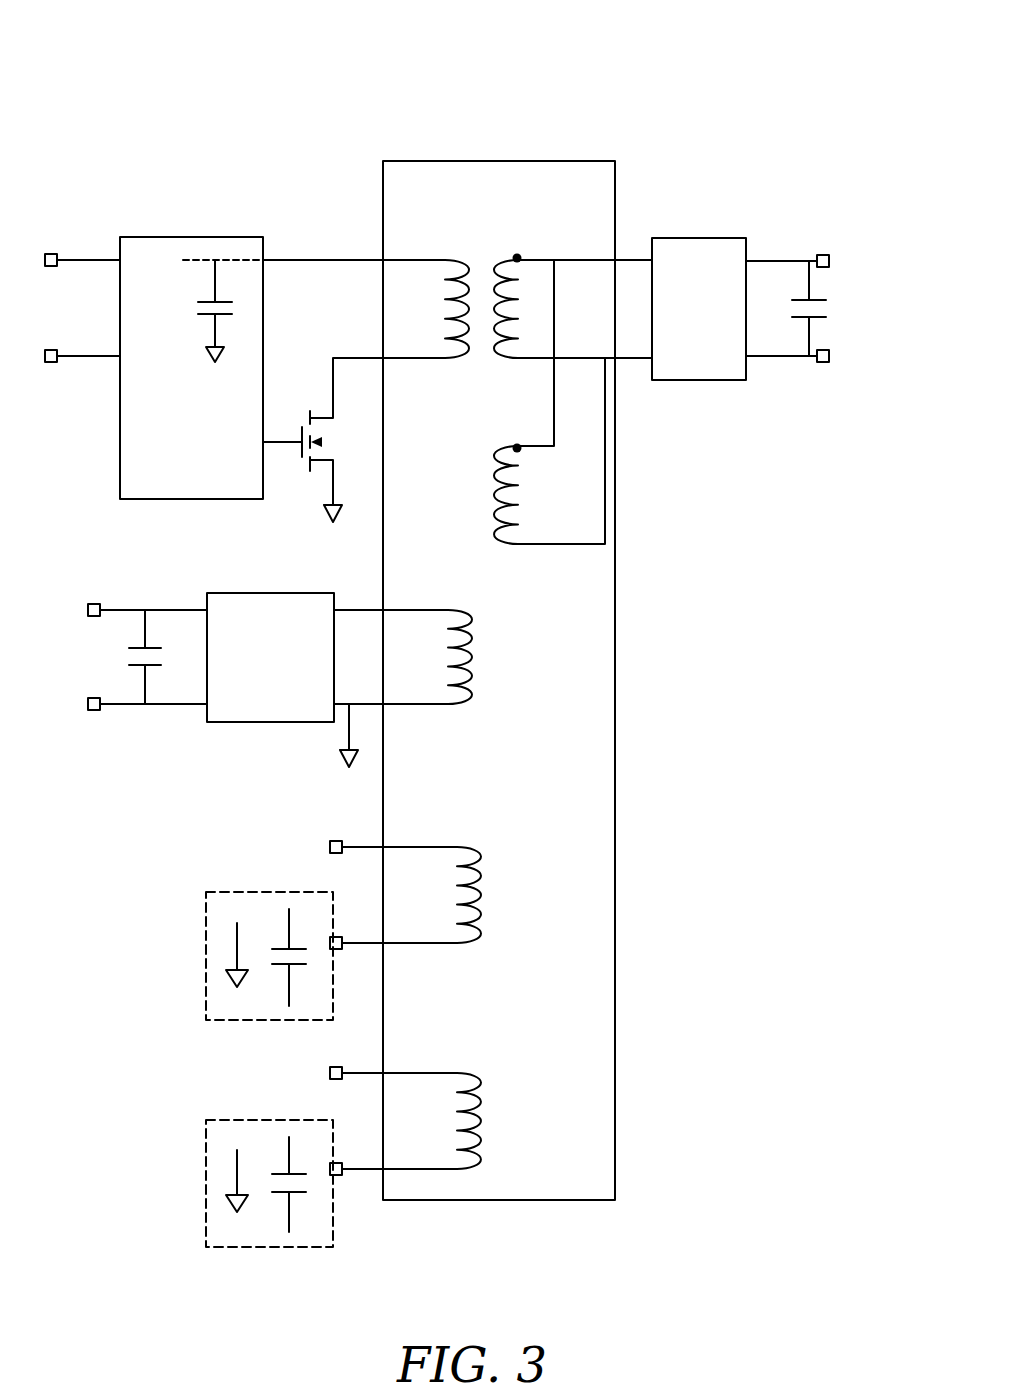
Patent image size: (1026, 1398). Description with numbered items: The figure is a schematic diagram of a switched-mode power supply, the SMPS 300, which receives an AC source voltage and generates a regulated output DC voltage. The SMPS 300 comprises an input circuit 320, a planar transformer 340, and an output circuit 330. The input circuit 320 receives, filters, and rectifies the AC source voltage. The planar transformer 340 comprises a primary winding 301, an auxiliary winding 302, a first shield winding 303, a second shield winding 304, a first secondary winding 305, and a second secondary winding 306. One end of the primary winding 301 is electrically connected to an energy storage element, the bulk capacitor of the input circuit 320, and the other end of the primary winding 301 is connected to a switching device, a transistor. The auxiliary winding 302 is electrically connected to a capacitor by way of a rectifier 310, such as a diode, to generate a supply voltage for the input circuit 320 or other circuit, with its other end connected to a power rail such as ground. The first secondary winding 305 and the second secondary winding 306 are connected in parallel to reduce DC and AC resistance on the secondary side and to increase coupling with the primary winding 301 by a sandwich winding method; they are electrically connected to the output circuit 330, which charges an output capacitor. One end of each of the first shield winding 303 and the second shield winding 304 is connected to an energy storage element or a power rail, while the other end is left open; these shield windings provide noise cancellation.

The SMPS 300 is at (187, 54).
The primary winding 301 is at (446, 358).
The auxiliary winding 302 is at (460, 704).
The first shield winding 303 is at (447, 847).
The second shield winding 304 is at (447, 1073).
The first secondary winding 305 is at (497, 358).
The second secondary winding 306 is at (510, 544).
The rectifier 310 is at (258, 593).
The input circuit 320 is at (216, 237).
The output circuit 330 is at (700, 238).
The planar transformer 340 is at (533, 161).